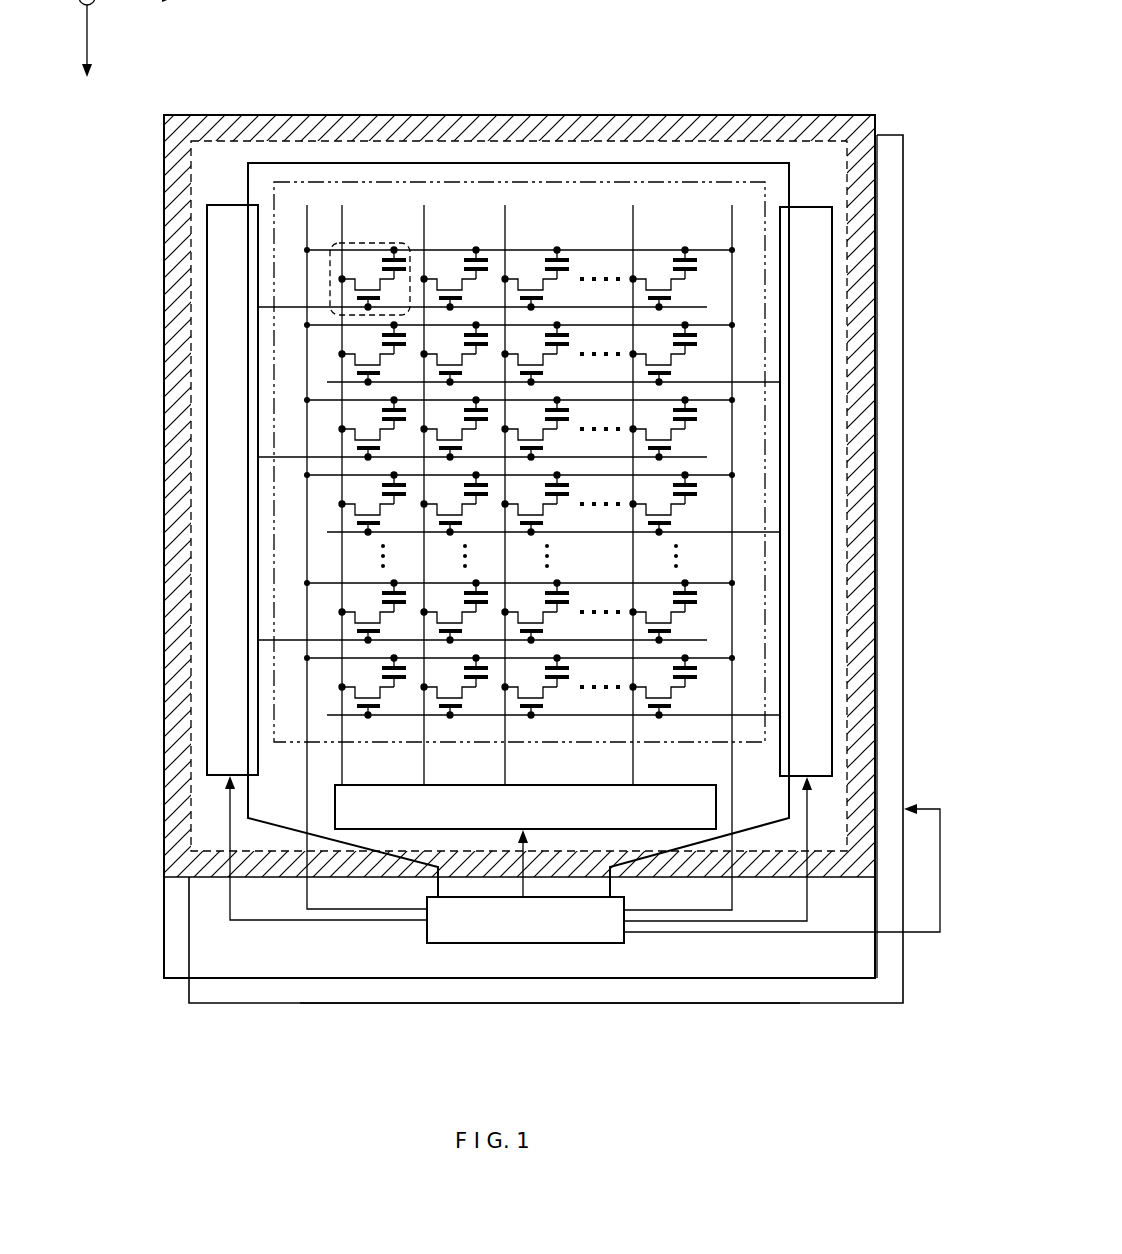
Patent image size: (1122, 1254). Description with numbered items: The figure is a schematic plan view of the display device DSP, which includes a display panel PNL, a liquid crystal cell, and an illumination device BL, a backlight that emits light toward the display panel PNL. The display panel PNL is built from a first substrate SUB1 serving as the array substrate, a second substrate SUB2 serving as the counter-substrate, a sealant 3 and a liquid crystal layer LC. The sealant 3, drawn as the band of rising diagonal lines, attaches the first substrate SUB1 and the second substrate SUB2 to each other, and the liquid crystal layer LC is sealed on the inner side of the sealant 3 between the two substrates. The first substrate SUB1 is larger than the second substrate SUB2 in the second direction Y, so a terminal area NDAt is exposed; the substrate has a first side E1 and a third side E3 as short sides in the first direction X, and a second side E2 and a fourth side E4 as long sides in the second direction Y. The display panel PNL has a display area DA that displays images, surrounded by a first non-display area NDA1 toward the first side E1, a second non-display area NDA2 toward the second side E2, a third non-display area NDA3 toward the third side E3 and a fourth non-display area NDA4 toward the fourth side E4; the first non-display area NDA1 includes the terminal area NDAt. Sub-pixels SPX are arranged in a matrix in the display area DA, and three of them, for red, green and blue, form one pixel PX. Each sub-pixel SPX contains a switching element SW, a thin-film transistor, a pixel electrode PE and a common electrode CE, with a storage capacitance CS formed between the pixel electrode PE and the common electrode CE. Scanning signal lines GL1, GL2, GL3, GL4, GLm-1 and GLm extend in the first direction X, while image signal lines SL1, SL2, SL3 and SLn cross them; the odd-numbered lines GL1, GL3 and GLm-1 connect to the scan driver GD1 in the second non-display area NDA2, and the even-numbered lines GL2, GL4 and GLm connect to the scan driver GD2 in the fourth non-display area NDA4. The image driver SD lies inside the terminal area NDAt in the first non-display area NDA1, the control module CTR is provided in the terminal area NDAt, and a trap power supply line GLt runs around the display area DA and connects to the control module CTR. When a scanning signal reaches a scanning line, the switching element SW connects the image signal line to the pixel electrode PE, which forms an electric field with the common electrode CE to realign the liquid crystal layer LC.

The display device DSP is at (927, 45).
The display panel PNL is at (832, 111).
The illumination device BL is at (890, 135).
The first substrate SUB1 is at (238, 978).
The second substrate SUB2 is at (189, 878).
The sealant 3 is at (170, 722).
The liquid crystal layer LC is at (200, 792).
The first side E1 is at (767, 982).
The second side E2 is at (164, 498).
The third side E3 is at (212, 115).
The fourth side E4 is at (876, 247).
The display area DA is at (563, 220).
The first non-display area NDA1 is at (323, 810).
The second non-display area NDA2 is at (200, 378).
The third non-display area NDA3 is at (728, 153).
The fourth non-display area NDA4 is at (837, 458).
The terminal area NDAt is at (587, 967).
The pixel PX is at (565, 73).
The sub-pixel SPX is at (535, 262).
The switching element SW is at (362, 300).
The storage capacitance CS is at (370, 279).
The common electrode CE is at (409, 257).
The pixel electrode PE is at (400, 278).
The scan driver GD1 is at (232, 490).
The scan driver GD2 is at (806, 491).
The image driver SD is at (525, 807).
The control module CTR is at (582, 859).
The image signal line SL1 is at (363, 495).
The image signal line SL2 is at (445, 495).
The image signal line SL3 is at (526, 495).
The image signal line SLn is at (673, 495).
The trap power supply line GLt is at (250, 183).
The scanning signal line GL1 is at (289, 307).
The scanning signal line GL2 is at (749, 382).
The scanning signal line GL3 is at (289, 457).
The scanning signal line GL4 is at (749, 532).
The scanning signal line GLm-1 is at (289, 640).
The scanning signal line GLm is at (749, 715).
The first direction X is at (147, 5).
The second direction Y is at (87, 52).